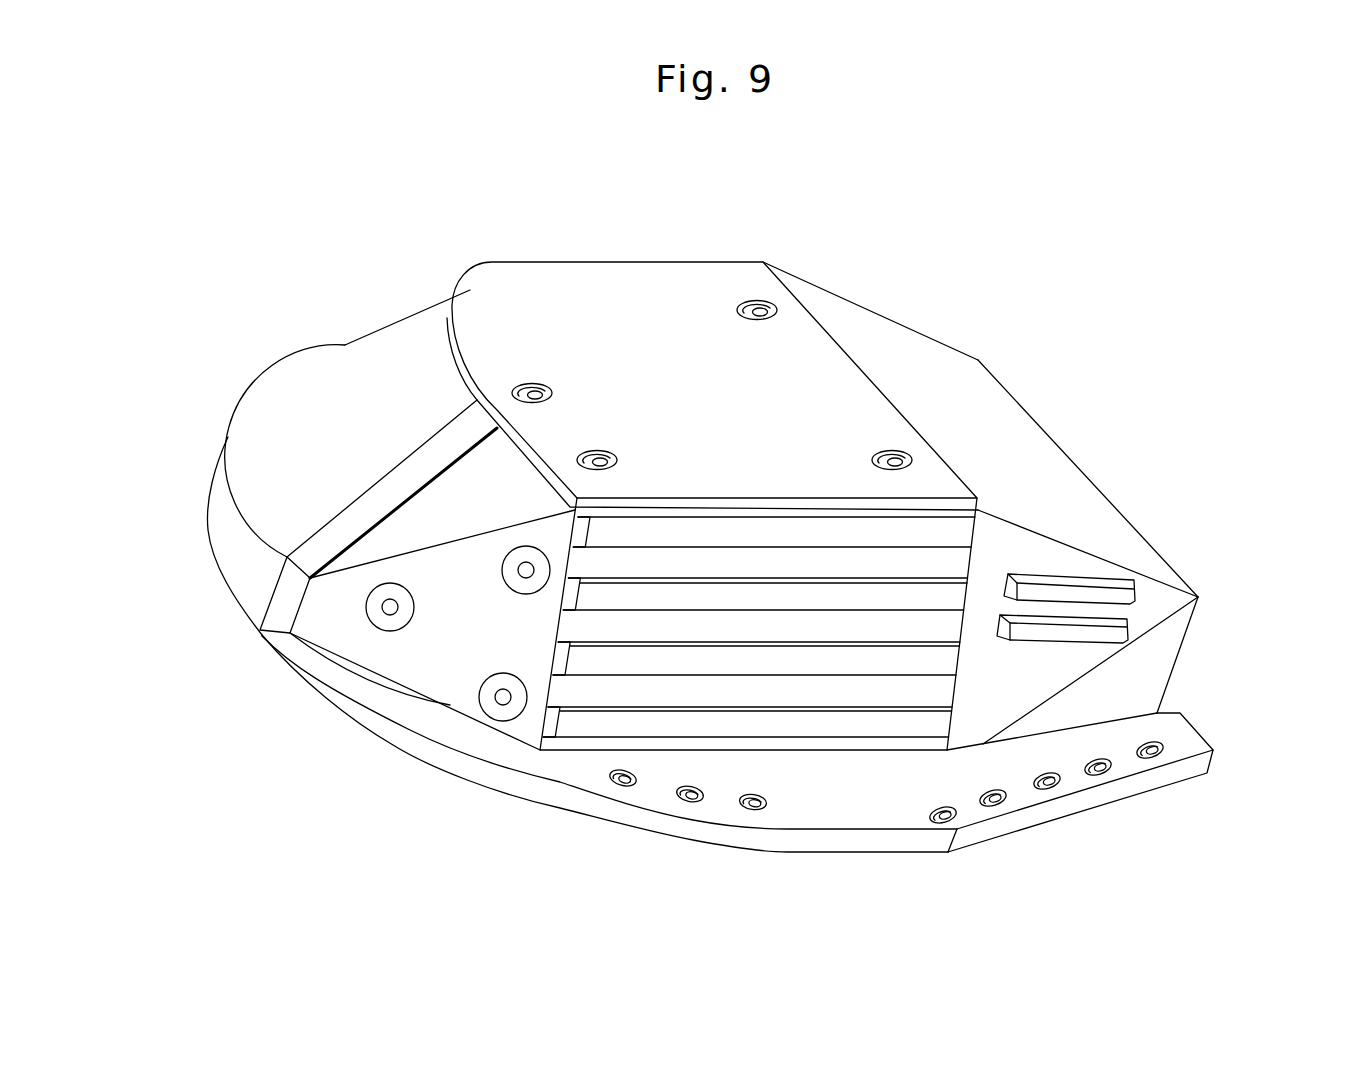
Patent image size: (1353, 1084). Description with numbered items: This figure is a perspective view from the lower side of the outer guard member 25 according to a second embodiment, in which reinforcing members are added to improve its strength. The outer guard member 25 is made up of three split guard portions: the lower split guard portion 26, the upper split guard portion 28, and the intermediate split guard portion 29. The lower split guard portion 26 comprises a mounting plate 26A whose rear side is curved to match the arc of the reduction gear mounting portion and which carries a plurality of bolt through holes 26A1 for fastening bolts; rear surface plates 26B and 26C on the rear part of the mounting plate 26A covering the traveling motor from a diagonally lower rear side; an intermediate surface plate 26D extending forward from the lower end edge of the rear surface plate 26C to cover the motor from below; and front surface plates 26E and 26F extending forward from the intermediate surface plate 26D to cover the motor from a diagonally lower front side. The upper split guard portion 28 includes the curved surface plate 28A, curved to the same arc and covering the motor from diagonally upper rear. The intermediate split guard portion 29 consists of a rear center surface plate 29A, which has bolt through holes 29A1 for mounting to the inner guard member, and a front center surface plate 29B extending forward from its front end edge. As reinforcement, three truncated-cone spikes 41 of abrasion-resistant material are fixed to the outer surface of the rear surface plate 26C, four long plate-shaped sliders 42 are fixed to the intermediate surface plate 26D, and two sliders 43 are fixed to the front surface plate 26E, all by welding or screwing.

The outer guard member 25 is at (822, 285).
The lower split guard portion 26 is at (527, 782).
The mounting plate 26A is at (425, 740).
The bolt through hole 26A1 is at (623, 783).
The rear surface plate 26B is at (430, 507).
The rear surface plate 26C is at (447, 630).
The intermediate surface plate 26D is at (832, 690).
The front surface plate 26E is at (1013, 548).
The front surface plate 26F is at (1140, 683).
The upper split guard portion 28 is at (318, 367).
The curved surface plate 28A is at (263, 437).
The intermediate split guard portion 29 is at (608, 283).
The rear center surface plate 29A is at (675, 298).
The bolt through hole 29A1 is at (757, 300).
The front center surface plate 29B is at (920, 360).
The spike 41 is at (390, 607).
The slider 42 is at (733, 593).
The slider 43 is at (1090, 592).